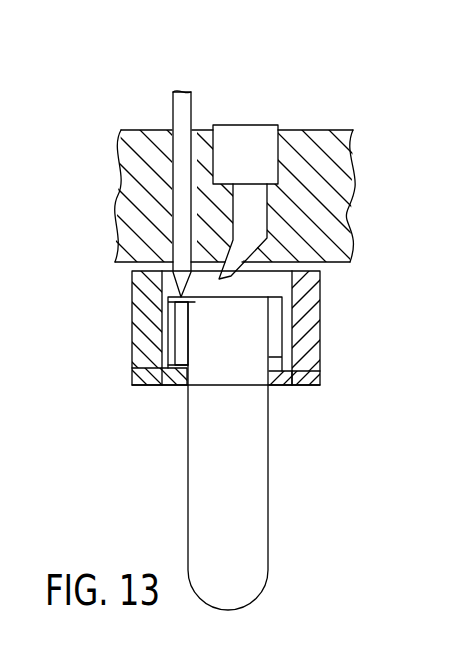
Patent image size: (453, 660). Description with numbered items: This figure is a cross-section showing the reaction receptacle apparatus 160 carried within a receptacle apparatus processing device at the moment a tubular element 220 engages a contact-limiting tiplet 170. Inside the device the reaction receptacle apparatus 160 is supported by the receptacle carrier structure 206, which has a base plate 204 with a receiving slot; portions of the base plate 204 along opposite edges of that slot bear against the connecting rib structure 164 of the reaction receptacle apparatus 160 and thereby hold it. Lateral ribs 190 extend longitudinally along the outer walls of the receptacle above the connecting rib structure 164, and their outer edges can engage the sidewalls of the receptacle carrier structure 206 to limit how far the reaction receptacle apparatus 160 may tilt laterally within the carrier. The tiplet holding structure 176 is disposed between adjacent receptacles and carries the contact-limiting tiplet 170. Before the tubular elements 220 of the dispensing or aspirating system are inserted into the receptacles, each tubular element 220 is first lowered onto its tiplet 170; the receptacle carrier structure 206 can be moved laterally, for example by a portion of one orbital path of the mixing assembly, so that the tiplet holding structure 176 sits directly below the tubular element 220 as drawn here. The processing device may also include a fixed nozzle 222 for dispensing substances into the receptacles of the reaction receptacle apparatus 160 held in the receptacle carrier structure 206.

The reaction receptacle apparatus 160 is at (253, 525).
The connecting rib structure 164 is at (173, 383).
The contact-limiting tiplet 170 is at (196, 358).
The tiplet holding structure 176 is at (168, 333).
The lateral ribs 190 is at (175, 307).
The base plate 204 is at (300, 388).
The receptacle carrier structure 206 is at (320, 347).
The tubular element 220 is at (189, 108).
The fixed nozzle 222 is at (257, 220).